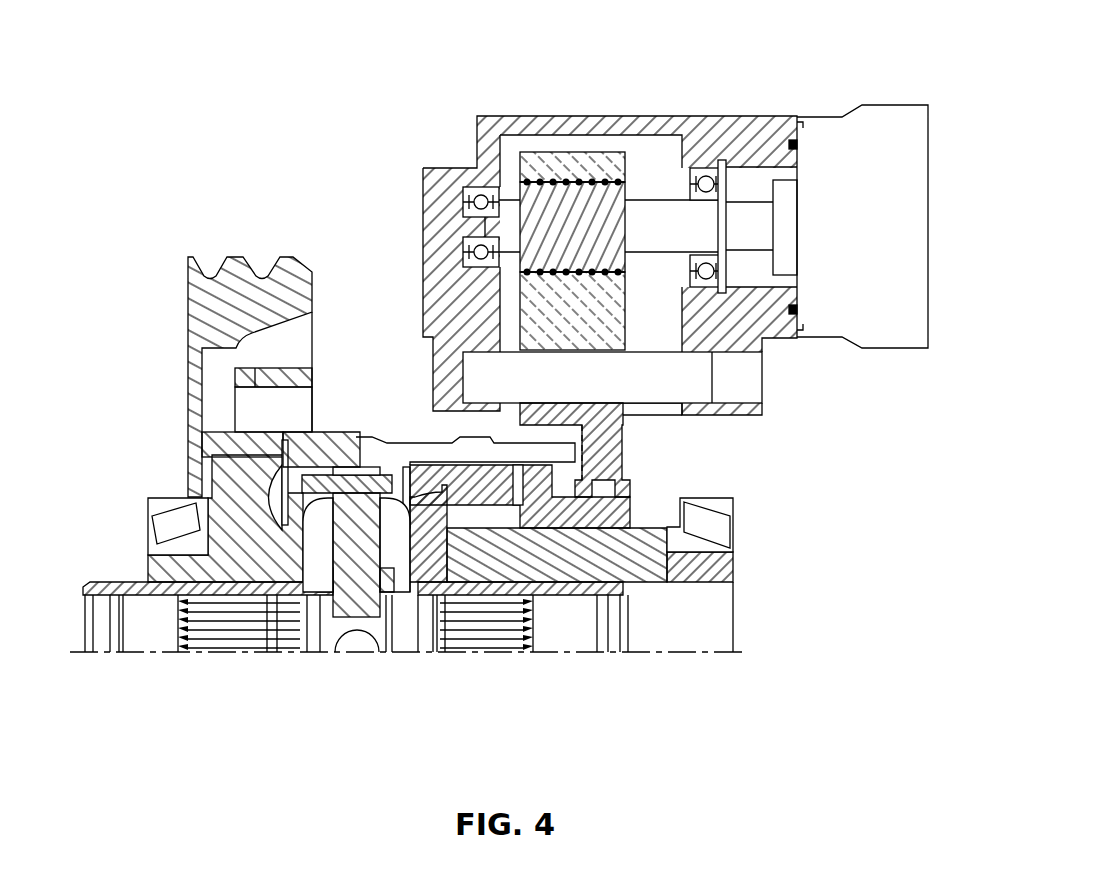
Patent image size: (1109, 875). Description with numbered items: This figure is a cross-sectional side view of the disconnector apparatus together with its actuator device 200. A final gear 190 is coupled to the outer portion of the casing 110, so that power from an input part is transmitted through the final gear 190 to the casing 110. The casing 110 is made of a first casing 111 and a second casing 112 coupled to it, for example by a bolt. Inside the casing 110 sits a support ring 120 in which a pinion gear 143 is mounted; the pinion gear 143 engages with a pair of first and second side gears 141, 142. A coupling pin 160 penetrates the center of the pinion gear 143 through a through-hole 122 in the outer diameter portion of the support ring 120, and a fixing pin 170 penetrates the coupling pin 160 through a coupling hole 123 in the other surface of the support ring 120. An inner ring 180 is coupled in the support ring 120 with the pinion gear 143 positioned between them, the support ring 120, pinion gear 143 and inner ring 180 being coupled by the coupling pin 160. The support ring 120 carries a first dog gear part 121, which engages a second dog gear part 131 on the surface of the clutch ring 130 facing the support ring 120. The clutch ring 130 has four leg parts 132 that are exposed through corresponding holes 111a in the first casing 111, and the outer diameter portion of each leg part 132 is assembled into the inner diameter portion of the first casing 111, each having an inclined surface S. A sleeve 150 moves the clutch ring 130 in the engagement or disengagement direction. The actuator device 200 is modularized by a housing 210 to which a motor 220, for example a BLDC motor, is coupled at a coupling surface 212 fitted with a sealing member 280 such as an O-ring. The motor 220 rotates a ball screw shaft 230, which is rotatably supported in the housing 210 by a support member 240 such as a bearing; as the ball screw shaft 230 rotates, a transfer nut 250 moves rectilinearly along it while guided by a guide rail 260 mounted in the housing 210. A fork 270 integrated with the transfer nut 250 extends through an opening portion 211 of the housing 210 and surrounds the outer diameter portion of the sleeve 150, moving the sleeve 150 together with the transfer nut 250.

The casing 110 is at (94, 380).
The first casing 111 is at (290, 383).
The holes 111a is at (458, 598).
The second casing 112 is at (226, 477).
The support ring 120 is at (315, 462).
The first dog gear part 121 is at (406, 470).
The through-hole 122 is at (338, 465).
The coupling hole 123 is at (322, 488).
The clutch ring 130 is at (545, 540).
The second dog gear part 131 is at (448, 550).
The leg parts 132 is at (598, 470).
The first side gear 141 is at (450, 598).
The second side gear 142 is at (252, 584).
The pinion gear 143 is at (428, 570).
The sleeve 150 is at (560, 572).
The coupling pin 160 is at (357, 645).
The fixing pin 170 is at (309, 598).
The inner ring 180 is at (391, 600).
The final gear 190 is at (193, 293).
The actuator device 200 is at (682, 231).
The housing 210 is at (513, 118).
The opening portion 211 is at (656, 423).
The coupling surface 212 is at (800, 150).
The motor 220 is at (895, 117).
The ball screw shaft 230 is at (548, 222).
The support member 240 is at (466, 192).
The transfer nut 250 is at (572, 162).
The guide rail 260 is at (695, 372).
The fork 270 is at (650, 505).
The sealing member 280 is at (793, 140).
The inclined surface S is at (482, 483).